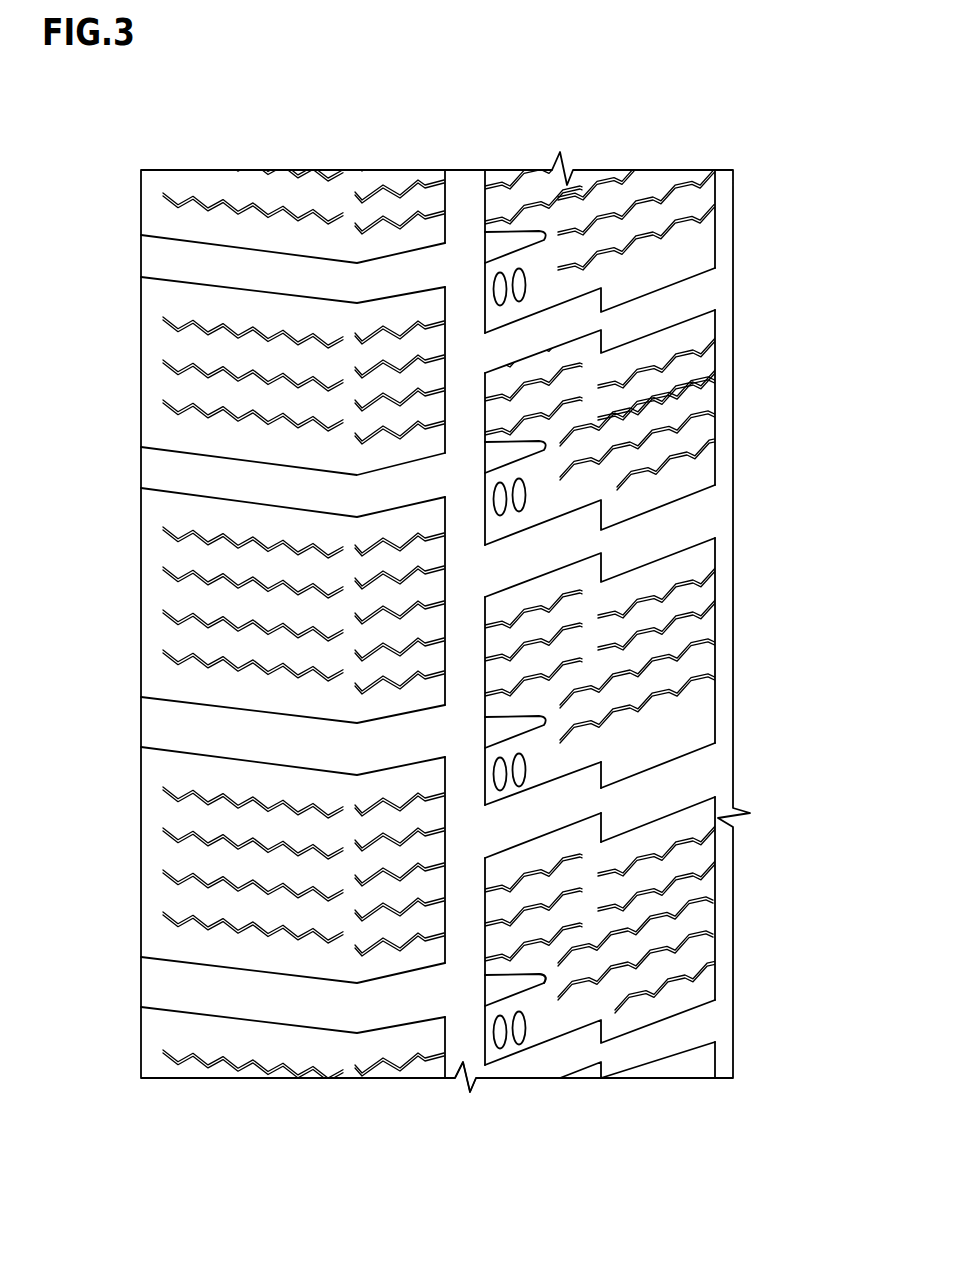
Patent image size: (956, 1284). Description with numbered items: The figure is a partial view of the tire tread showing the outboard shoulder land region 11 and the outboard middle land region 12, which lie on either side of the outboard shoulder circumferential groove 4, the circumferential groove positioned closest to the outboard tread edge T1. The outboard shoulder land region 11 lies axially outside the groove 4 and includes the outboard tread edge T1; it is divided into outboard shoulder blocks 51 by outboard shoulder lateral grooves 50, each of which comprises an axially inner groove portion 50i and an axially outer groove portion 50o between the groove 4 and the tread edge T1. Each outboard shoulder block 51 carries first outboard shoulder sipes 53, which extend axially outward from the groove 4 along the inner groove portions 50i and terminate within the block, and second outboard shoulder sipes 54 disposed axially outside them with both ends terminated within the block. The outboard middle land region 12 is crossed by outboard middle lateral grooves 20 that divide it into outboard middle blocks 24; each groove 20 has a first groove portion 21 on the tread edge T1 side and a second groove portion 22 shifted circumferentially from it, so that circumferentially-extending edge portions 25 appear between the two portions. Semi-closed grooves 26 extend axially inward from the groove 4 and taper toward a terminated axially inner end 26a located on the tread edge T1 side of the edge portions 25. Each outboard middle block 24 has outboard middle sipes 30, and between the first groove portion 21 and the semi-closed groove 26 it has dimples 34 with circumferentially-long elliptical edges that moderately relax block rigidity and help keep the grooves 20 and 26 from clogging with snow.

The outboard tread edge T1 is at (140, 200).
The outboard shoulder circumferential groove 4 is at (463, 198).
The outboard shoulder land region 11 is at (308, 198).
The outboard middle land region 12 is at (632, 218).
The outboard middle lateral groove 20 is at (687, 300).
The first groove portion 21 is at (603, 767).
The second groove portion 22 is at (667, 795).
The outboard middle block 24 is at (627, 395).
The circumferentially-extending edge portion 25 is at (603, 827).
The semi-closed groove 26 is at (512, 720).
The terminated axially inner end 26a is at (546, 982).
The outboard middle sipe 30 is at (665, 660).
The dimple 34 is at (520, 497).
The outboard shoulder lateral groove 50 is at (263, 478).
The axially inner groove portion 50i is at (405, 740).
The axially outer groove portion 50o is at (250, 740).
The outboard shoulder block 51 is at (265, 870).
The first outboard shoulder sipe 53 is at (377, 363).
The second outboard shoulder sipe 54 is at (217, 332).